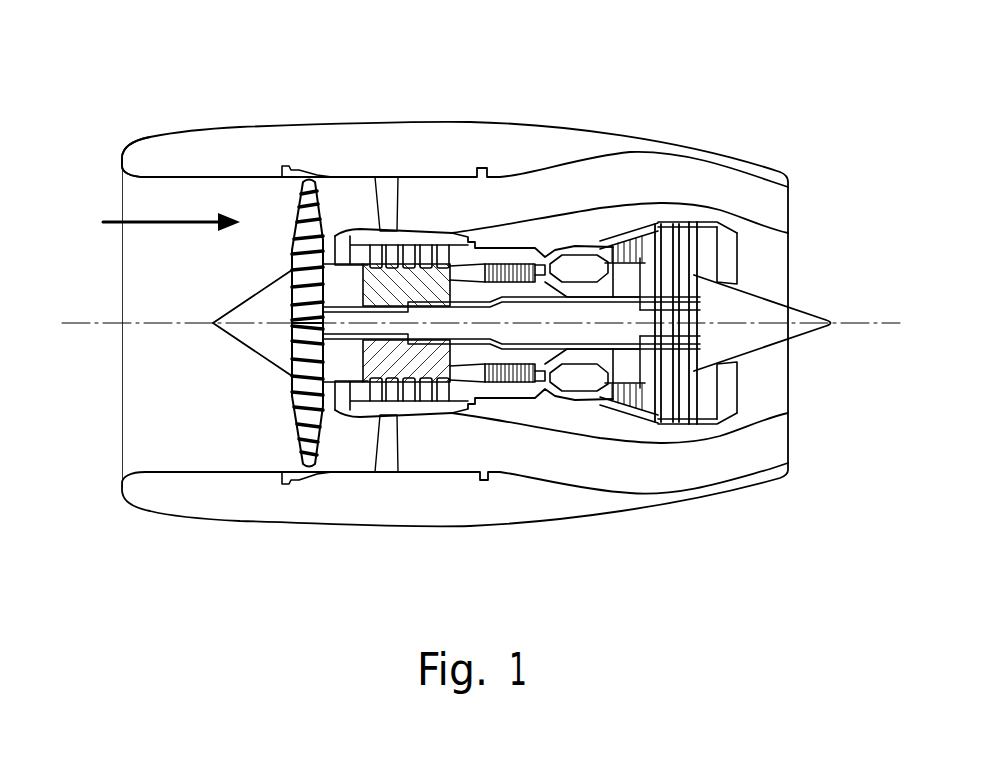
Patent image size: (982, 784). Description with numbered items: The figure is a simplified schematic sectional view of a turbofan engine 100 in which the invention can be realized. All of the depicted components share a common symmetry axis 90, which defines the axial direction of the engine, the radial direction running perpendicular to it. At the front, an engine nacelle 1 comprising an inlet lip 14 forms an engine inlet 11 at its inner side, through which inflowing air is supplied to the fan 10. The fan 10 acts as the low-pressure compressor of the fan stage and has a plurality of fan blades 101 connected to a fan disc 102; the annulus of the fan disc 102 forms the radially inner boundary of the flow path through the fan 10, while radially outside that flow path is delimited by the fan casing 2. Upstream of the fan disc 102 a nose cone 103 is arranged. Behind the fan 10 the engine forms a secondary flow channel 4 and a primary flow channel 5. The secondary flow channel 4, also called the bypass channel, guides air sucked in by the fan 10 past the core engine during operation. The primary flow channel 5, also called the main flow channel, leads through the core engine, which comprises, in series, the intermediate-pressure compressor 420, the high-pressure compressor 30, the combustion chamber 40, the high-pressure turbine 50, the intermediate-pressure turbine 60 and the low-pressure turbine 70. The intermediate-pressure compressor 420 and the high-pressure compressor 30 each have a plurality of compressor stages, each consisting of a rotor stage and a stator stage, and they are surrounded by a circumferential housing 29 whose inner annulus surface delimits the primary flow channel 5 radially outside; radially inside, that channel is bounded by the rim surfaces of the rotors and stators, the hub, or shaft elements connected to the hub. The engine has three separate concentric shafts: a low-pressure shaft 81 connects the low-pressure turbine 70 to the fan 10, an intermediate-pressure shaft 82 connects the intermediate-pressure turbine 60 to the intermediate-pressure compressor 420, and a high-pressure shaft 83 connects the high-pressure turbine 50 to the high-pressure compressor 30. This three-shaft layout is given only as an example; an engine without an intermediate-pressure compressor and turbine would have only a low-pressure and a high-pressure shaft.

The engine nacelle 1 is at (163, 158).
The fan casing 2 is at (318, 174).
The secondary flow channel 4 is at (342, 198).
The primary flow channel 5 is at (358, 246).
The fan 10 is at (286, 231).
The engine inlet 11 is at (148, 181).
The inlet lip 14 is at (123, 156).
The circumferential housing 29 is at (450, 236).
The high-pressure compressor 30 is at (512, 289).
The combustion chamber 40 is at (573, 256).
The high-pressure turbine 50 is at (628, 243).
The intermediate-pressure turbine 60 is at (650, 237).
The low-pressure turbine 70 is at (706, 235).
The low-pressure shaft 81 is at (531, 330).
The intermediate-pressure shaft 82 is at (565, 346).
The high-pressure shaft 83 is at (600, 360).
The symmetry axis 90 is at (865, 322).
The turbofan engine 100 is at (493, 117).
The fan blades 101 is at (306, 417).
The fan disc 102 is at (290, 360).
The nose cone 103 is at (252, 297).
The intermediate-pressure compressor 420 is at (412, 238).